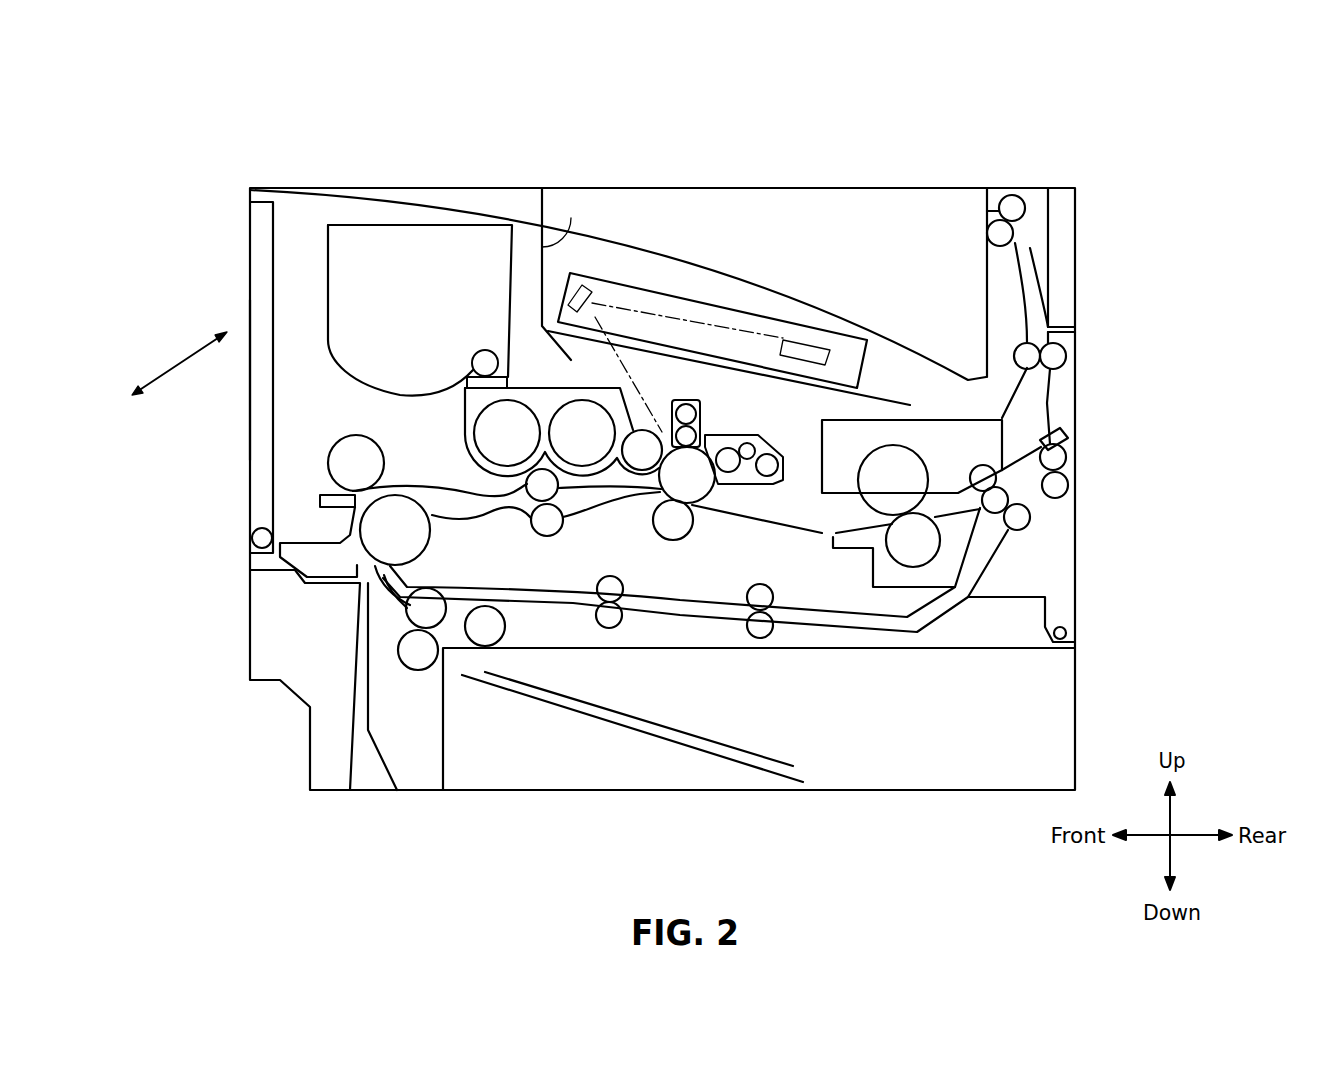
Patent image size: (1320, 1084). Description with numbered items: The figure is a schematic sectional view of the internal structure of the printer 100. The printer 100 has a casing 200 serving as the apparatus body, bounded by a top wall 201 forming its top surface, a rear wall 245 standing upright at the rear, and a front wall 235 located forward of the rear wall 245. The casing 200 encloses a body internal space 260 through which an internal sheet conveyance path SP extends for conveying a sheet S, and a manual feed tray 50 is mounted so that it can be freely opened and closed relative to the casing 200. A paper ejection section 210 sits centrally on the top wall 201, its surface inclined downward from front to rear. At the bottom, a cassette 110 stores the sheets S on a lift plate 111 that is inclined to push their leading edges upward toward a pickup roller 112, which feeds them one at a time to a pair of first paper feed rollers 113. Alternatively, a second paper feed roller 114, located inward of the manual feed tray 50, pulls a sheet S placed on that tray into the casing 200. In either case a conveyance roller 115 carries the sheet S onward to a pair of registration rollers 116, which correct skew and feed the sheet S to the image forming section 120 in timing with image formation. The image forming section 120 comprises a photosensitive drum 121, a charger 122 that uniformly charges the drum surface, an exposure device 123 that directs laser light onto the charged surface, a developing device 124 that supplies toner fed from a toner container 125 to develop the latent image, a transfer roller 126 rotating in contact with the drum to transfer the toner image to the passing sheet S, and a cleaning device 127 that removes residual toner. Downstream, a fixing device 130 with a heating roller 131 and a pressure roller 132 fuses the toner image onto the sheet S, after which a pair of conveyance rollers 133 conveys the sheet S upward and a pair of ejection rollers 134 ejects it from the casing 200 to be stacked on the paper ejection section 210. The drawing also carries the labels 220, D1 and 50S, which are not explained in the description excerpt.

The printer 100 is at (1048, 138).
The casing 200 is at (1050, 187).
The top wall 201 is at (897, 187).
The paper ejection section 210 is at (638, 238).
The scanner support frame 220 is at (880, 398).
The image forming section 120 is at (695, 400).
The exposure device 123 is at (658, 315).
The toner container 125 is at (363, 255).
The body internal space 260 is at (571, 360).
The developing device 124 is at (542, 387).
The charger 122 is at (708, 390).
The photosensitive drum 121 is at (698, 488).
The transfer roller 126 is at (672, 527).
The cleaning device 127 is at (777, 446).
The front wall 235 is at (247, 292).
The manual feed tray 50 is at (247, 457).
The opening/closing direction D1 is at (172, 357).
The tray roller 50S is at (254, 530).
The second paper feed roller 114 is at (345, 470).
The conveyance roller 115 is at (387, 540).
The pair of registration rollers 116 is at (547, 523).
The internal sheet conveyance path SP is at (587, 493).
The pair of first paper feed rollers 113 is at (425, 617).
The pickup roller 112 is at (483, 637).
The cassette 110 is at (610, 762).
The lift plate 111 is at (694, 748).
The sheet S is at (728, 745).
The fixing device 130 is at (1155, 453).
The heating roller 131 is at (905, 478).
The pressure roller 132 is at (925, 540).
The rear wall 245 is at (1078, 417).
The pair of conveyance rollers 133 is at (1066, 360).
The pair of ejection rollers 134 is at (1002, 205).